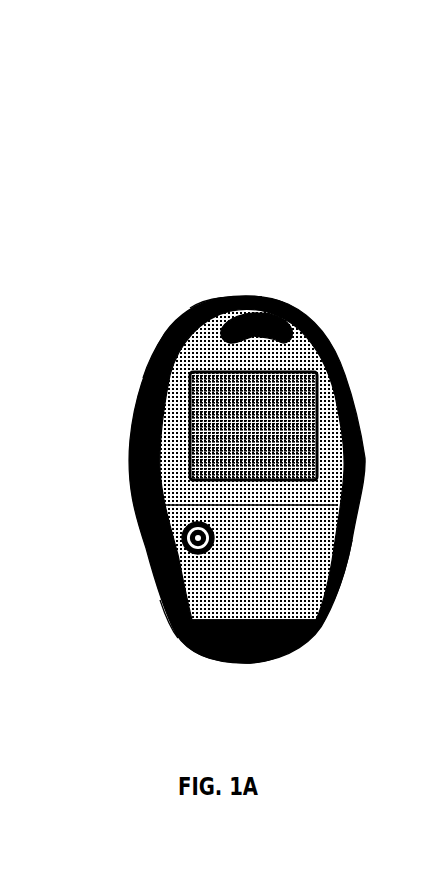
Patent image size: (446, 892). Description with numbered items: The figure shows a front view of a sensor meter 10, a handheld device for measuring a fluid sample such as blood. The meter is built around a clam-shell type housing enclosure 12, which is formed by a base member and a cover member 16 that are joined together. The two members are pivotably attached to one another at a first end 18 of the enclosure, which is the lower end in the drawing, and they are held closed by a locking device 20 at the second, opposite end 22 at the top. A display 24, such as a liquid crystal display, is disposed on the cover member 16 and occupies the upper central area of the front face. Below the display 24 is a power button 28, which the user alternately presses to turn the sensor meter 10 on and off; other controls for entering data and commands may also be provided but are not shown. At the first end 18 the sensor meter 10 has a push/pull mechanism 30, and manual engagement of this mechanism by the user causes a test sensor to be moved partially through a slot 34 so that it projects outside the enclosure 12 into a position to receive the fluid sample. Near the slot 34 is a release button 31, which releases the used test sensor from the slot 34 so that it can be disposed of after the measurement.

The sensor meter 10 is at (280, 158).
The housing enclosure 12 is at (355, 406).
The cover member 16 is at (347, 549).
The first end 18 is at (154, 645).
The locking device 20 is at (217, 296).
The second end 22 is at (146, 299).
The display 24 is at (208, 430).
The power button 28 is at (182, 538).
The push/pull mechanism 30 is at (242, 658).
The release button 31 is at (290, 321).
The slot 34 is at (257, 289).